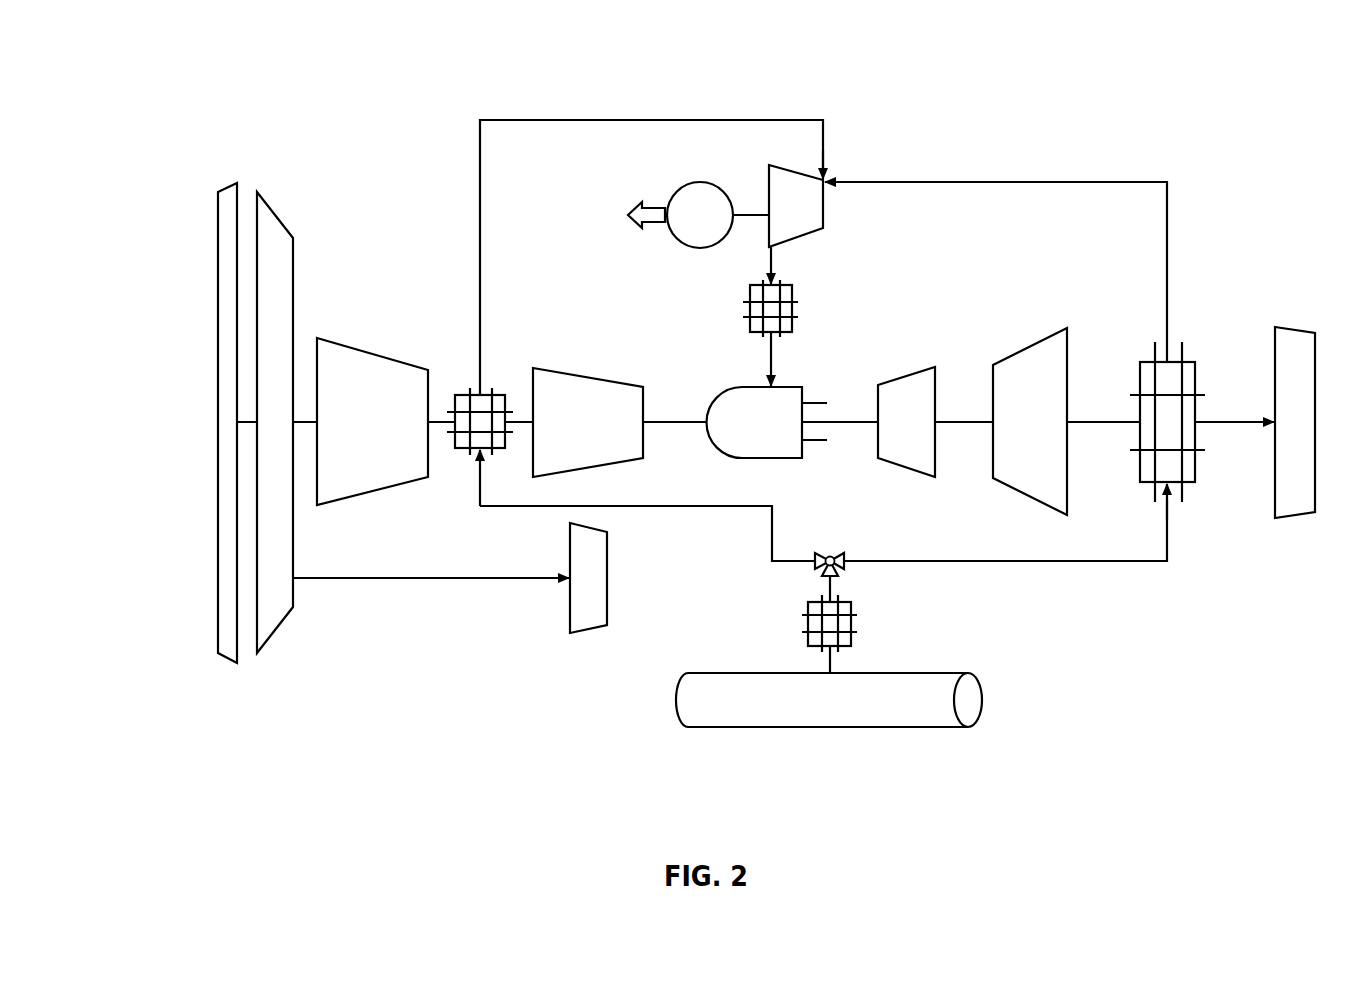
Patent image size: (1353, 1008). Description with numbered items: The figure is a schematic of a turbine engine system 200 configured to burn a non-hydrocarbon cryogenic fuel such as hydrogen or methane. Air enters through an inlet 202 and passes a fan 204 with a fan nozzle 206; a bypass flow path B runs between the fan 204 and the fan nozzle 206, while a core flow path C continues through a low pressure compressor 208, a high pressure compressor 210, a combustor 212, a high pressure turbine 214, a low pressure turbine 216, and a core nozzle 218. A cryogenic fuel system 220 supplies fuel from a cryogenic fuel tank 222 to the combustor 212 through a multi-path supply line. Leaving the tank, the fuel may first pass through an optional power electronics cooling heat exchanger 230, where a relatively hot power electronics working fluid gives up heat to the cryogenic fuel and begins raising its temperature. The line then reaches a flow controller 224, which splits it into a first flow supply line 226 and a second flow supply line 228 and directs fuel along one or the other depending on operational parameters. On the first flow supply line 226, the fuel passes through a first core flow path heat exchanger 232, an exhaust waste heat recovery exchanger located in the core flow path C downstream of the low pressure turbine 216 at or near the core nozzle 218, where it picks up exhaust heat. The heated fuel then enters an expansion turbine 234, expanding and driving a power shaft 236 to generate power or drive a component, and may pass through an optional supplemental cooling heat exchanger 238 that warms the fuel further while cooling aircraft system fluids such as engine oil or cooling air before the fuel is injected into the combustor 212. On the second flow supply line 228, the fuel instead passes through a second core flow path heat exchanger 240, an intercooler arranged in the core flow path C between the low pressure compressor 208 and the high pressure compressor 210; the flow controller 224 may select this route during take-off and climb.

The turbine engine system 200 is at (149, 69).
The inlet 202 is at (227, 185).
The fan 204 is at (275, 213).
The fan nozzle 206 is at (590, 630).
The low pressure compressor 208 is at (370, 350).
The high pressure compressor 210 is at (590, 377).
The combustor 212 is at (797, 383).
The high pressure turbine 214 is at (905, 375).
The low pressure turbine 216 is at (1027, 345).
The core nozzle 218 is at (1295, 330).
The cryogenic fuel system 220 is at (1052, 636).
The cryogenic fuel tank 222 is at (867, 728).
The flow controller 224 is at (832, 556).
The first flow supply line 226 is at (990, 561).
The second flow supply line 228 is at (680, 506).
The power electronics cooling heat exchanger 230 is at (852, 623).
The first core flow path heat exchanger 232 is at (1187, 482).
The expansion turbine 234 is at (775, 197).
The power shaft 236 is at (678, 243).
The supplemental cooling heat exchanger 238 is at (793, 308).
The second core flow path heat exchanger 240 is at (497, 393).
The bypass flow path B is at (375, 580).
The core flow path C is at (297, 420).